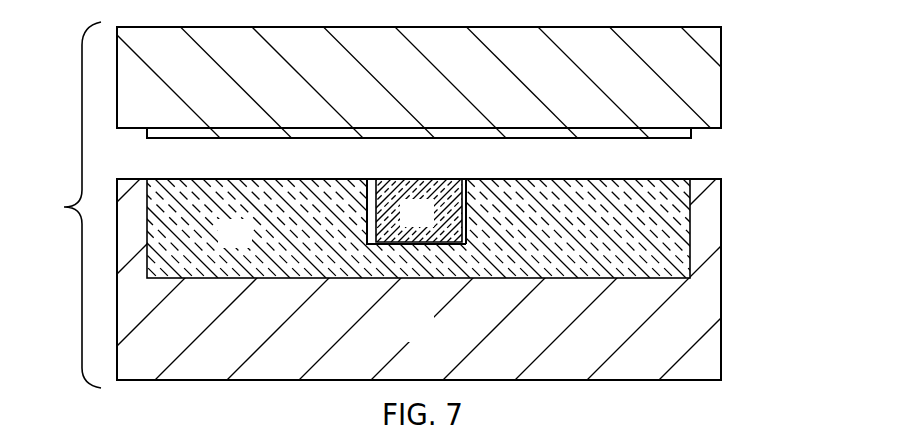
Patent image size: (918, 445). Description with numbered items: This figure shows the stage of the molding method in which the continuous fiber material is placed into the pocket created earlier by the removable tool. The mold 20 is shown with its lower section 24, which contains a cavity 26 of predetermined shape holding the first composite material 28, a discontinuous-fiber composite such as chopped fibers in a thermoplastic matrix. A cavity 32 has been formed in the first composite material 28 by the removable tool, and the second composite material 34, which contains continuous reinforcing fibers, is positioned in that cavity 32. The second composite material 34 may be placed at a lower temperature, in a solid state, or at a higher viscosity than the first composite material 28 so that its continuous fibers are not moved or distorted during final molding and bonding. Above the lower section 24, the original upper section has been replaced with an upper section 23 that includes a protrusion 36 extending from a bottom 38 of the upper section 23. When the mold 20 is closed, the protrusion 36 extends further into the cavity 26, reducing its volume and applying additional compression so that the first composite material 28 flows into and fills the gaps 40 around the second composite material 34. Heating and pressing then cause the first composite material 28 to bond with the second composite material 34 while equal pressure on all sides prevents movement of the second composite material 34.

The mold 20 is at (66, 205).
The upper section 23 is at (429, 96).
The lower section 24 is at (430, 338).
The cavity 26 is at (696, 238).
The first composite material 28 is at (248, 246).
The cavity 32 is at (472, 203).
The second composite material 34 is at (430, 224).
The protrusion 36 is at (623, 132).
The bottom 38 is at (720, 131).
The gaps 40 is at (371, 183).